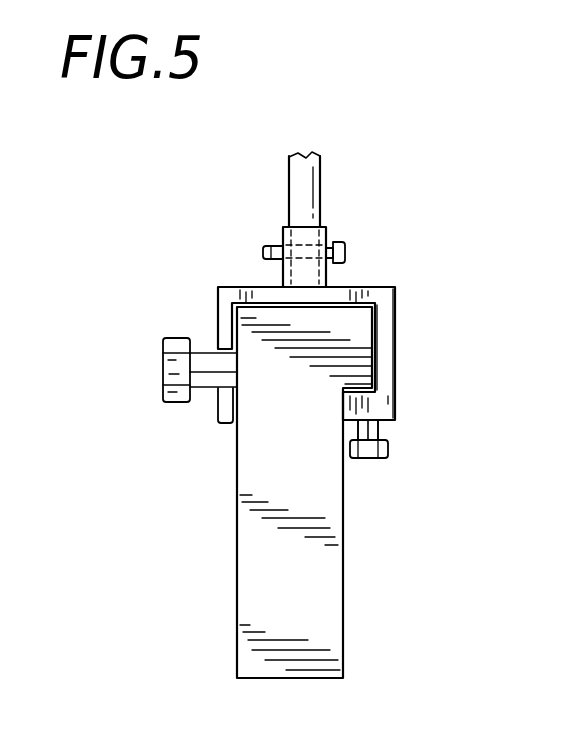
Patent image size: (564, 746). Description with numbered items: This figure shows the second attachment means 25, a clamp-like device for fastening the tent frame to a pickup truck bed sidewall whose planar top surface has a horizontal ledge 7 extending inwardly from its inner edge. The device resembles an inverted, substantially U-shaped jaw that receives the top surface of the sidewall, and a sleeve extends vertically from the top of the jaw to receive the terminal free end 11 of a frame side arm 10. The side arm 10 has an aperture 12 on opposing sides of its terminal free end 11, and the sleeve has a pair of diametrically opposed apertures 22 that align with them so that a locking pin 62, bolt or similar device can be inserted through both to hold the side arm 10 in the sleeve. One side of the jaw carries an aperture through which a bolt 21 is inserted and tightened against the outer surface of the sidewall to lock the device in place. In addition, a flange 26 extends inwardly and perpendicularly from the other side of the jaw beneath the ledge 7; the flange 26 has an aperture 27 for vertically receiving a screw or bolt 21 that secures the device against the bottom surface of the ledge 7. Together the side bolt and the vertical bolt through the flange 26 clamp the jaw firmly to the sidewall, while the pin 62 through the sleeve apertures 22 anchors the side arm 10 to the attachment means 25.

The second attachment means 25 is at (448, 206).
The side arm 10 is at (290, 194).
The aperture 12 is at (282, 253).
The apertures 22 is at (278, 242).
The locking pin 62 is at (346, 251).
The terminal free end 11 is at (298, 280).
The flange 26 is at (396, 377).
The ledge 7 is at (348, 357).
The bolt 21 is at (163, 368).
The aperture 27 is at (385, 431).